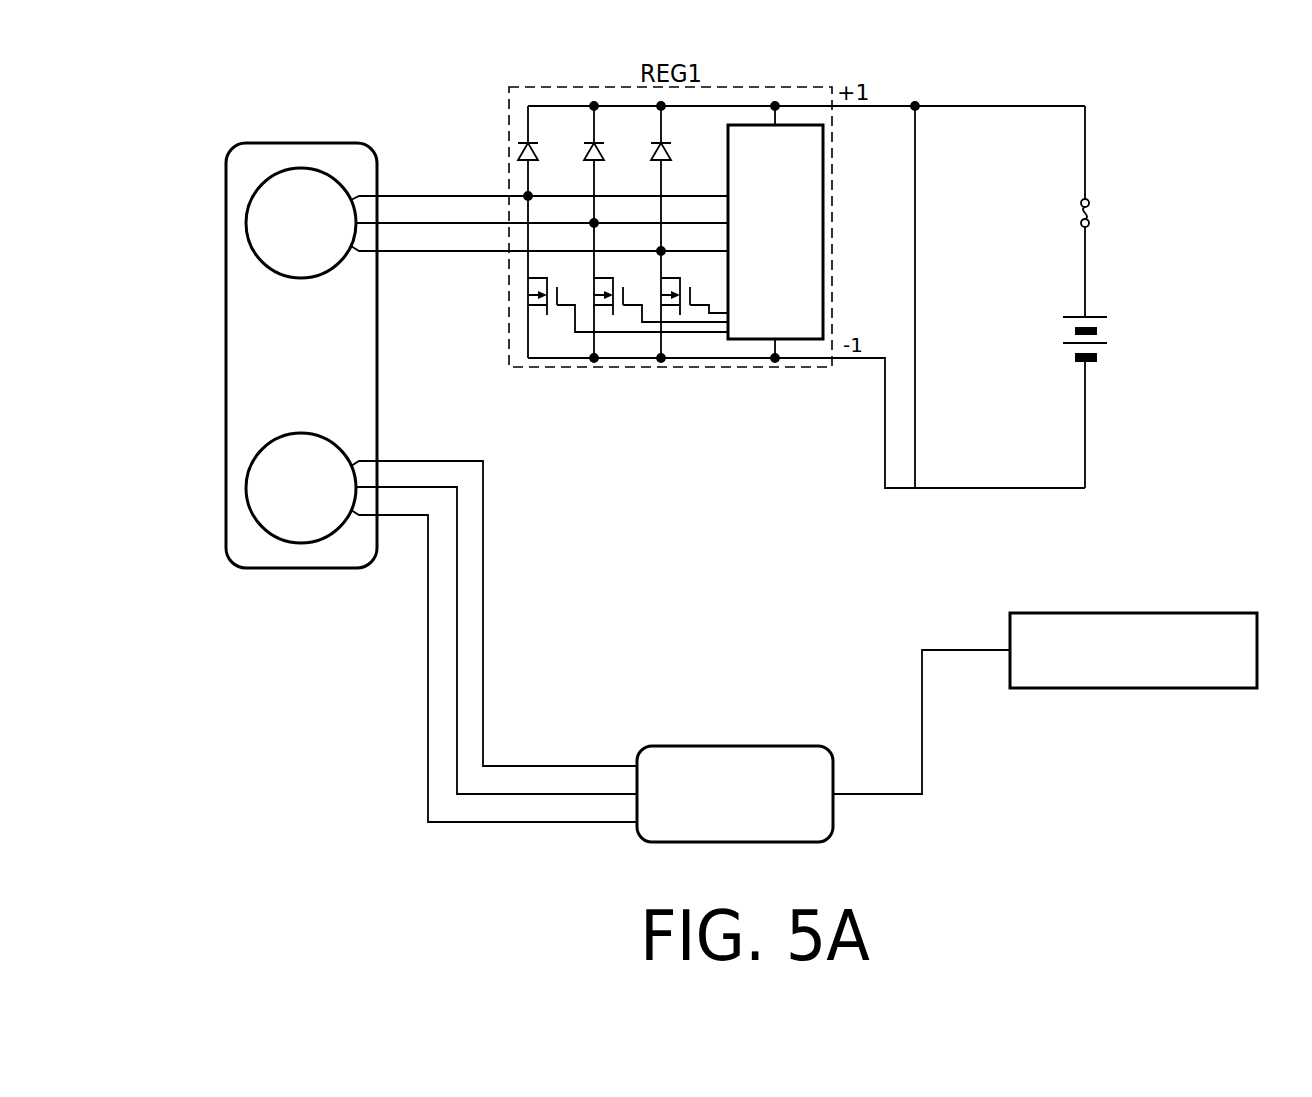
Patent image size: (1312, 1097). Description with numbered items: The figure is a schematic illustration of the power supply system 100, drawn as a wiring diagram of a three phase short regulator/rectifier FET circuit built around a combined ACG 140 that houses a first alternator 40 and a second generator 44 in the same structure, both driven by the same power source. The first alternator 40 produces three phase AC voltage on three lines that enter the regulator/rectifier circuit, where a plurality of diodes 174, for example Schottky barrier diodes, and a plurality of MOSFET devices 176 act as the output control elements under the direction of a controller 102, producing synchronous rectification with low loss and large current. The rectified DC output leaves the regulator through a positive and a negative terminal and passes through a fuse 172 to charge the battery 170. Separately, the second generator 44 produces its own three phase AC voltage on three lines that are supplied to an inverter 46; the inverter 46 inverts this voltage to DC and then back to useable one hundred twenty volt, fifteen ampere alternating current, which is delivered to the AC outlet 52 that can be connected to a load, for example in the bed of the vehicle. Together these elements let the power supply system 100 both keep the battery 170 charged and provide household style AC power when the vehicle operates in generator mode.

The power supply system 100 is at (1146, 82).
The ACG 140 is at (309, 101).
The alternator ACG1 40 is at (287, 278).
The generator ACG2 44 is at (287, 433).
The controller 102 is at (823, 268).
The diodes 174 is at (528, 161).
The MOSFET devices 176 is at (553, 308).
The fuse 172 is at (1158, 213).
The battery 170 is at (1198, 343).
The inverter 46 is at (732, 745).
The AC outlet 52 is at (1130, 612).